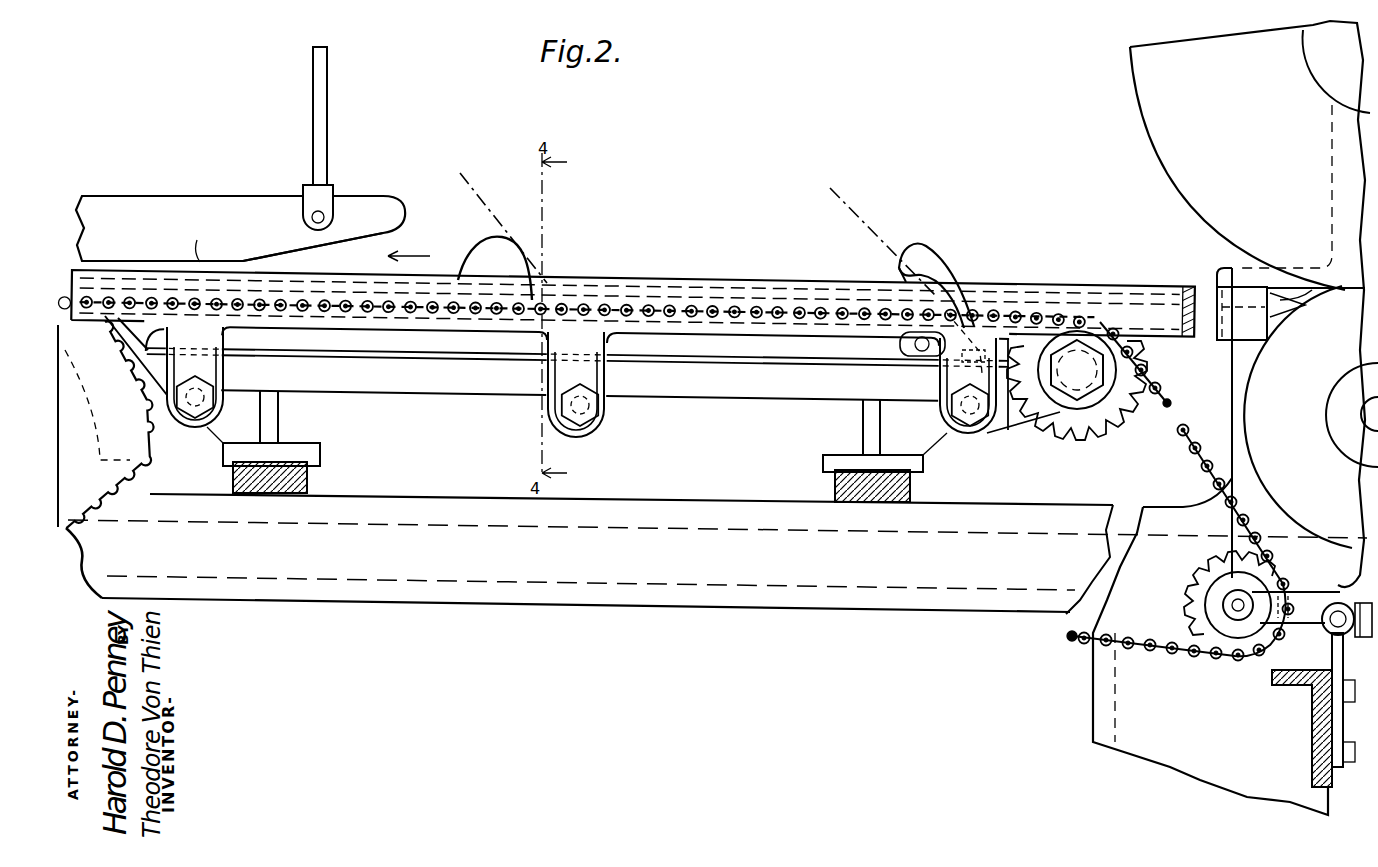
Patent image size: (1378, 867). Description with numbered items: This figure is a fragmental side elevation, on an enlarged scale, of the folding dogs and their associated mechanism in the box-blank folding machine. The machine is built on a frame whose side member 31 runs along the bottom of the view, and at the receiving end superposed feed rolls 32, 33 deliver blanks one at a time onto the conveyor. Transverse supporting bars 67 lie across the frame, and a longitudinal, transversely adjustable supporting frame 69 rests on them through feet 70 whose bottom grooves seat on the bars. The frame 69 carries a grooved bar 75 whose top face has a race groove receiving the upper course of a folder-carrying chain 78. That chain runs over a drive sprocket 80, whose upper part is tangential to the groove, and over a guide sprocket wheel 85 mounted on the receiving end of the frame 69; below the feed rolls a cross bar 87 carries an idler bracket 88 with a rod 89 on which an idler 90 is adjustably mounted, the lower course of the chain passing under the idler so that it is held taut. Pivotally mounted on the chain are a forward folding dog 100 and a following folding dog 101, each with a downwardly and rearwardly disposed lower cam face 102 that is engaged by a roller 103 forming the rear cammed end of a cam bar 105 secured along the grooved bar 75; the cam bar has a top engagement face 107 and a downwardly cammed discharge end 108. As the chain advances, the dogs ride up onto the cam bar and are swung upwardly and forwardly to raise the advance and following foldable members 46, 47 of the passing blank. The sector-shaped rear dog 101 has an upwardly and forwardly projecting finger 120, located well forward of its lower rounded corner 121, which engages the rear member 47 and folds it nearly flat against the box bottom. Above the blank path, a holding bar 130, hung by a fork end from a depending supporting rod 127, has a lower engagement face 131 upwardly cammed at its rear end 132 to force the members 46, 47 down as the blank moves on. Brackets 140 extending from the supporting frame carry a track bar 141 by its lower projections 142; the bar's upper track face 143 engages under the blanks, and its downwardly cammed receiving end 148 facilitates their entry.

The frame side member 31 is at (712, 469).
The upper feed roll 32 is at (1150, 110).
The lower feed roll 33 is at (1235, 541).
The advance foldable member 46 is at (484, 208).
The following foldable member 47 is at (863, 214).
The transverse supporting bar 67 is at (307, 483).
The supporting frame 69 is at (378, 383).
The feet 70 is at (313, 450).
The grooved bar 75 is at (795, 367).
The folder-carrying chain 78 is at (1182, 432).
The drive sprocket 80 is at (153, 445).
The guide sprocket wheel 85 is at (1077, 432).
The cross bar 87 is at (1312, 738).
The idler bracket 88 is at (1335, 713).
The rod 89 is at (1327, 638).
The idler 90 is at (1197, 586).
The forward folding dog 100 is at (489, 255).
The following folding dog 101 is at (943, 274).
The lower cam face 102 is at (945, 375).
The roller 103 is at (904, 346).
The cam bar 105 is at (808, 345).
The top engagement face 107 is at (553, 333).
The downwardly cammed discharge end 108 is at (204, 318).
The finger 120 is at (900, 253).
The lower rounded corner 121 is at (978, 352).
The rod 127 is at (328, 116).
The holding bar 130 is at (253, 228).
The lower engagement face 131 is at (212, 246).
The rear end 132 is at (400, 229).
The brackets 140 is at (593, 437).
The track bar 141 is at (1130, 310).
The lower projections 142 is at (602, 412).
The upper track face 143 is at (1045, 286).
The downwardly cammed receiving end 148 is at (1308, 306).